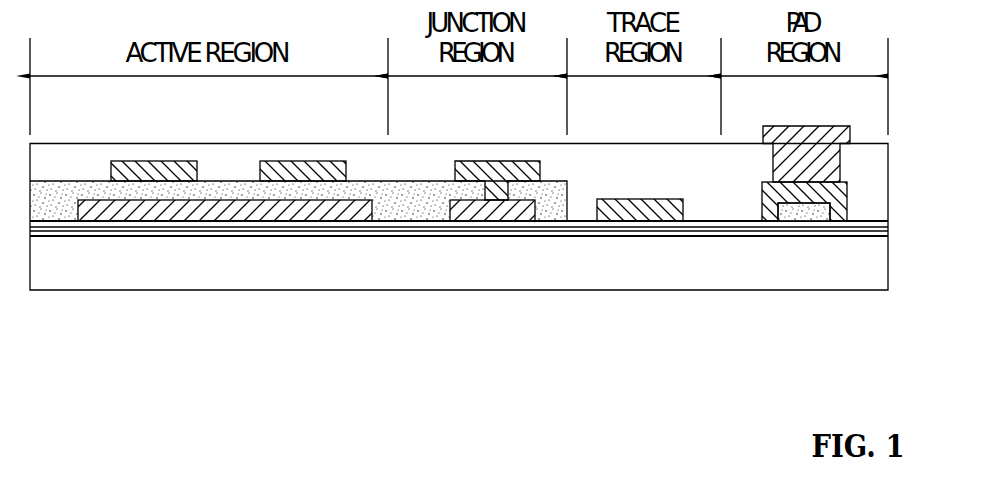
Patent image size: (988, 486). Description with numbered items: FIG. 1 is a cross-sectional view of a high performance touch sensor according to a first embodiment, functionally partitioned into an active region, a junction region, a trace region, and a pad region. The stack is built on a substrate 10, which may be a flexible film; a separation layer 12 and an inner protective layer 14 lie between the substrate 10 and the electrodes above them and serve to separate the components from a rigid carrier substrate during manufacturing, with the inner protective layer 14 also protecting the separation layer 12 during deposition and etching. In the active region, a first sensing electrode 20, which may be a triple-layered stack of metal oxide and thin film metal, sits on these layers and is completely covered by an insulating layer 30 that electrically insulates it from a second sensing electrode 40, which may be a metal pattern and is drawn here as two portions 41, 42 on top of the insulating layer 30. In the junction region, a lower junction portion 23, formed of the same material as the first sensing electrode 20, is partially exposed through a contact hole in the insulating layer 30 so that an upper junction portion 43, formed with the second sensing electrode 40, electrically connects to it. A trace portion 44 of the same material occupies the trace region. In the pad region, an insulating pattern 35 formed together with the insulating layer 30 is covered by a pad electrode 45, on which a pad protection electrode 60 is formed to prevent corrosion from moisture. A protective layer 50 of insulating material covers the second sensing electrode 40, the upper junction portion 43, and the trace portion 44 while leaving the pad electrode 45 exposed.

The substrate 10 is at (432, 278).
The separation layer 12 is at (85, 232).
The inner protective layer 14 is at (118, 224).
The first sensing electrode 20 is at (337, 212).
The lower junction portion 23 is at (520, 210).
The insulating layer 30 is at (55, 213).
The insulating pattern 35 is at (812, 213).
The second sensing electrode 40 is at (228, 271).
The first upper electrode portion 41 is at (160, 170).
The second upper electrode portion 42 is at (285, 168).
The upper junction portion 43 is at (495, 187).
The trace portion 44 is at (652, 208).
The pad electrode 45 is at (770, 221).
The protective layer 50 is at (720, 207).
The pad protection electrode 60 is at (837, 160).